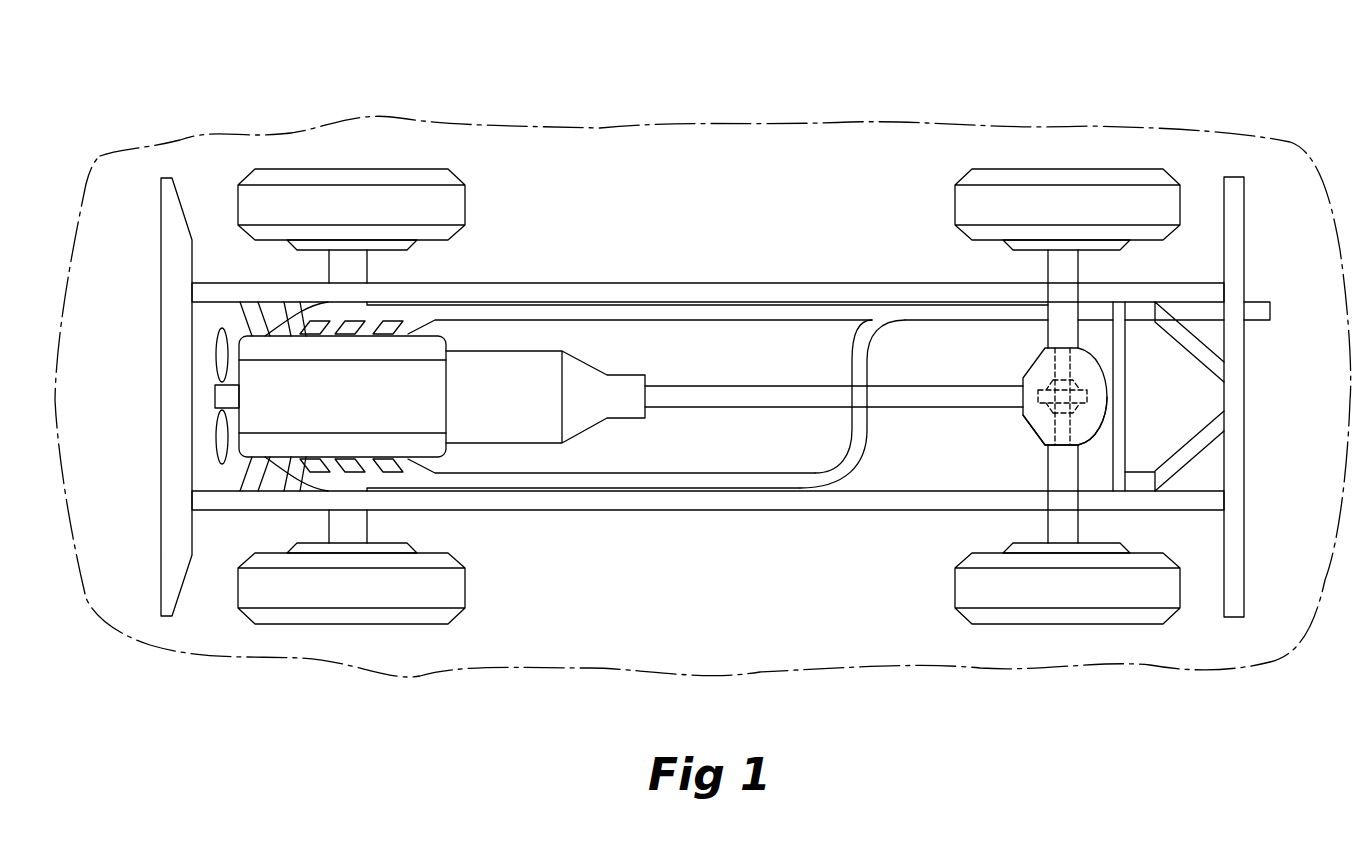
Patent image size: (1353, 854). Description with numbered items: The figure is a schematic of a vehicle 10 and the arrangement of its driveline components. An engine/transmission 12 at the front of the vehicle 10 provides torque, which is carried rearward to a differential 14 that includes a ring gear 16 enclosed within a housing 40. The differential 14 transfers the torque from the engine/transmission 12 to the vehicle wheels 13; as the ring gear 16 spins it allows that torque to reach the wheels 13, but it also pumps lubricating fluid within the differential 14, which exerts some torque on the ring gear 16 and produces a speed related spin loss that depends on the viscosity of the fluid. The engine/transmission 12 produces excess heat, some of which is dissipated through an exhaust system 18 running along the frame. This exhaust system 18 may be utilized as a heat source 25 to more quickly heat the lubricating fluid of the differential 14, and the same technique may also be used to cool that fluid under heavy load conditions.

The vehicle 10 is at (1200, 45).
The engine/transmission 12 is at (410, 398).
The vehicle wheels 13 is at (955, 204).
The differential 14 is at (1045, 377).
The ring gear 16 is at (1038, 396).
The housing 40 is at (1041, 436).
The exhaust system 18 is at (1281, 279).
The heat source 25 is at (1265, 302).